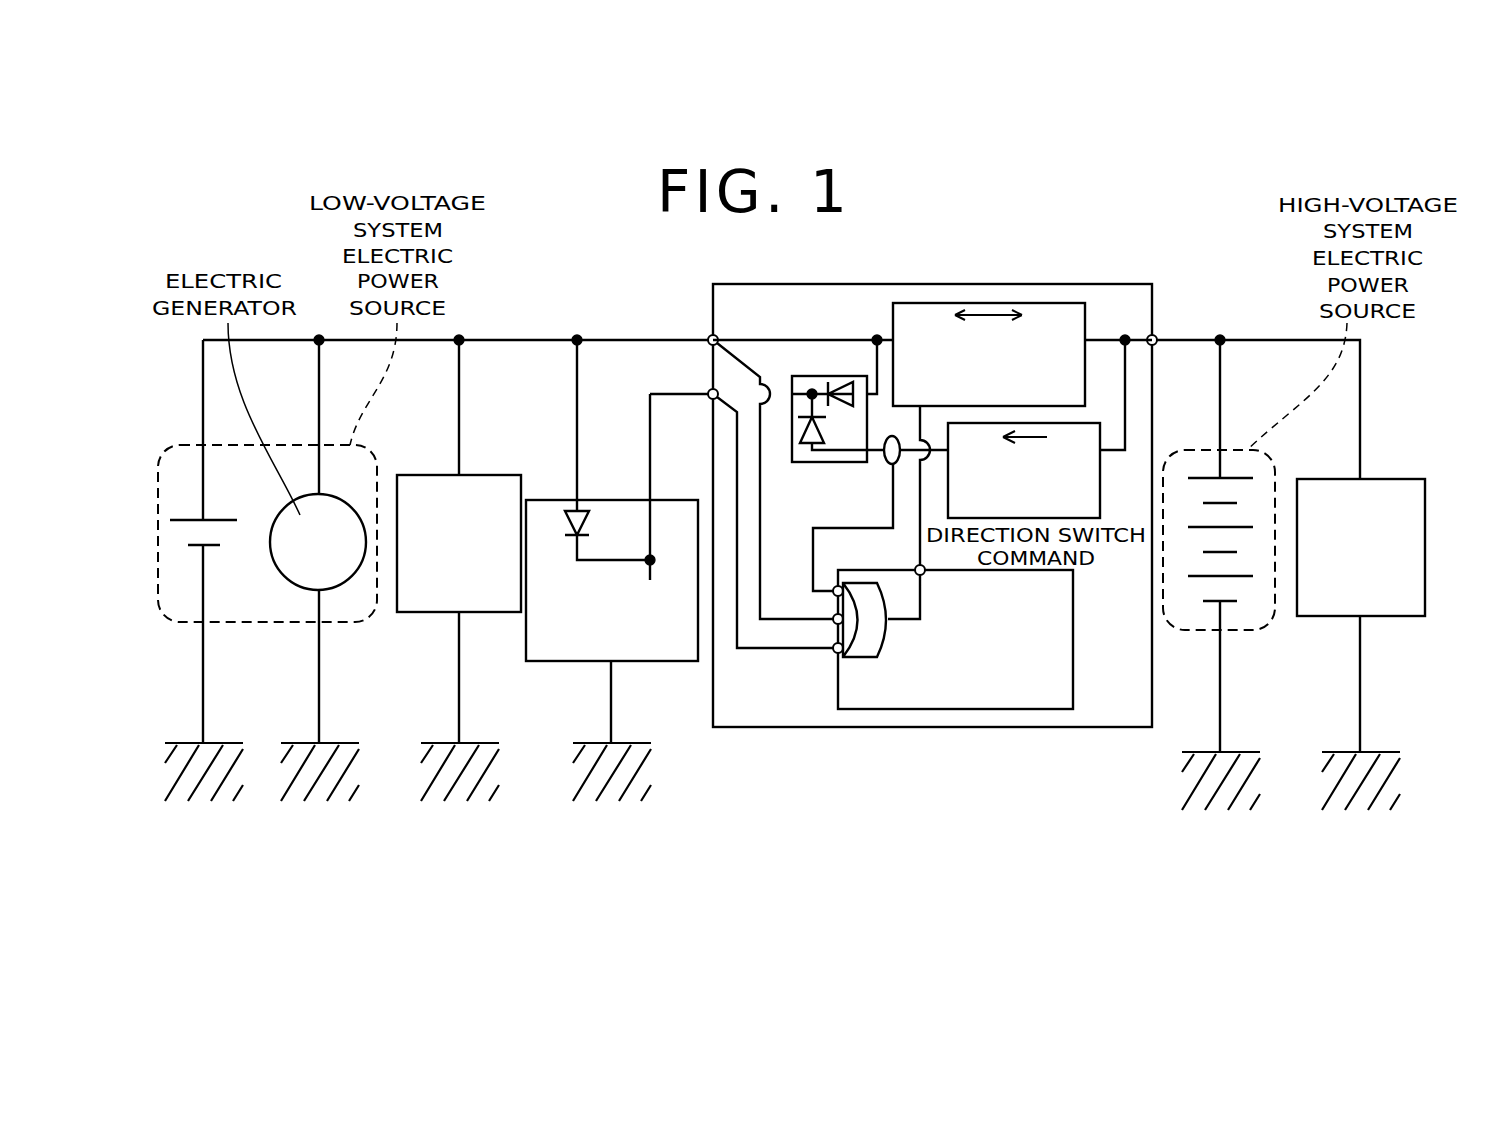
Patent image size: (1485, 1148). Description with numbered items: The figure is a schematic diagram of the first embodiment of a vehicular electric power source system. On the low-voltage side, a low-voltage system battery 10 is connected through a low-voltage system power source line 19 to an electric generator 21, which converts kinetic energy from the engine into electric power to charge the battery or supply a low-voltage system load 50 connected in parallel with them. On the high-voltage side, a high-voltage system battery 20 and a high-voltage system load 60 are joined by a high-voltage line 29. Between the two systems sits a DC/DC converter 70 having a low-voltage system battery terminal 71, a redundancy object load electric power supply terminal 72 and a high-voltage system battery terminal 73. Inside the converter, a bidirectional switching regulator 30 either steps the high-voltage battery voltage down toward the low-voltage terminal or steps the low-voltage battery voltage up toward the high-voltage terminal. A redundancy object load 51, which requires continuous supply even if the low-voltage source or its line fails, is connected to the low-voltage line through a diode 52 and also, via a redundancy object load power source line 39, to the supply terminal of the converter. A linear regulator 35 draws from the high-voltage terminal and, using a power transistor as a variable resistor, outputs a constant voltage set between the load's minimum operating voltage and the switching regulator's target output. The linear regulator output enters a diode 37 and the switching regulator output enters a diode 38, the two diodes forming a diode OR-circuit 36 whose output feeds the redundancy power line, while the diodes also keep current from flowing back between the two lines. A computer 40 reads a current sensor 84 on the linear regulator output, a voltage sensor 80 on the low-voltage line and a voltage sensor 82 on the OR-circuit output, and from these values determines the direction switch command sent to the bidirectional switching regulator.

The low-voltage system battery 10 is at (203, 548).
The low-voltage system power source line 19 is at (507, 338).
The high-voltage system battery 20 is at (1200, 578).
The electric generator 21 is at (300, 588).
The high-voltage system power line 29 is at (1257, 340).
The bidirectional switching regulator 30 is at (893, 314).
The linear regulator 35 is at (1100, 478).
The diode OR-circuit 36 is at (850, 463).
The diode 37 is at (816, 462).
The diode 38 is at (836, 390).
The redundancy object load power source line 39 is at (650, 448).
The computer 40 is at (1073, 680).
The low-voltage system load 50 is at (493, 476).
The redundancy object load 51 is at (526, 647).
The diode 52 is at (565, 525).
The high-voltage system load 60 is at (1370, 478).
The DC/DC converter 70 is at (812, 727).
The low-voltage system battery terminal 71 is at (708, 339).
The redundancy object load electric power supply terminal 72 is at (708, 393).
The high-voltage system battery terminal 73 is at (1156, 336).
The voltage sensor 80 is at (786, 616).
The voltage sensor 82 is at (810, 648).
The current sensor 84 is at (813, 528).